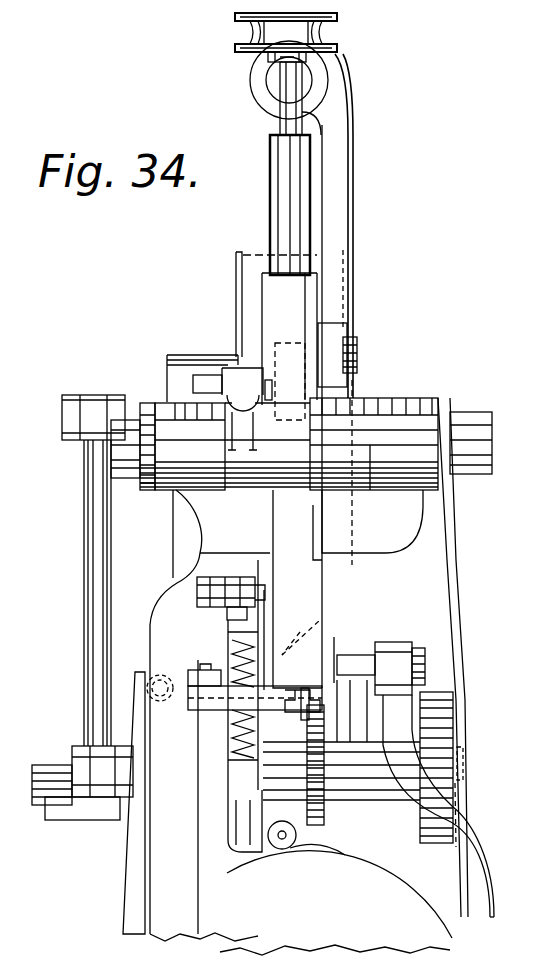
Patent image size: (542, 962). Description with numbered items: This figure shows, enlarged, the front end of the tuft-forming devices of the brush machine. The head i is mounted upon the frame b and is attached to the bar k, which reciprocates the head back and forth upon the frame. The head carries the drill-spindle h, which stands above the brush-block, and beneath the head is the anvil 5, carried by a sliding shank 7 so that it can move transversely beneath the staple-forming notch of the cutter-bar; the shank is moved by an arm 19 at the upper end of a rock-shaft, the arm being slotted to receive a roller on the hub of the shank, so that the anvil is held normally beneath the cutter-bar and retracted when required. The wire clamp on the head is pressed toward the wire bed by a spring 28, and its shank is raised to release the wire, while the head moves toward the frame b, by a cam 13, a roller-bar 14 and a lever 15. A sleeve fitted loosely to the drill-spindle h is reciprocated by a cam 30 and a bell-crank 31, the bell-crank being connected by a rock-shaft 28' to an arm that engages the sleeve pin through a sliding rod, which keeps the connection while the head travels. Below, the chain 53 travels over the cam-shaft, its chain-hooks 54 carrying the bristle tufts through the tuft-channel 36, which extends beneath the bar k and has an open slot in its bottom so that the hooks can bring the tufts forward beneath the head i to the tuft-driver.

The drill-spindle h is at (280, 124).
The head i is at (292, 406).
The frame b is at (208, 715).
The bar k is at (300, 632).
The rock-shaft 28' is at (139, 477).
The bell-crank 31 is at (80, 748).
The lever 15 is at (252, 591).
The roller-bar 14 is at (222, 790).
The cam 13 is at (345, 838).
The cam 30 is at (387, 867).
The arm 19 is at (197, 672).
The sliding shank 7 is at (200, 699).
The spring 28 is at (203, 703).
The anvil 5 is at (293, 690).
The chain-hooks 54 is at (304, 704).
The tuft-channel 36 is at (320, 697).
The chain 53 is at (326, 812).